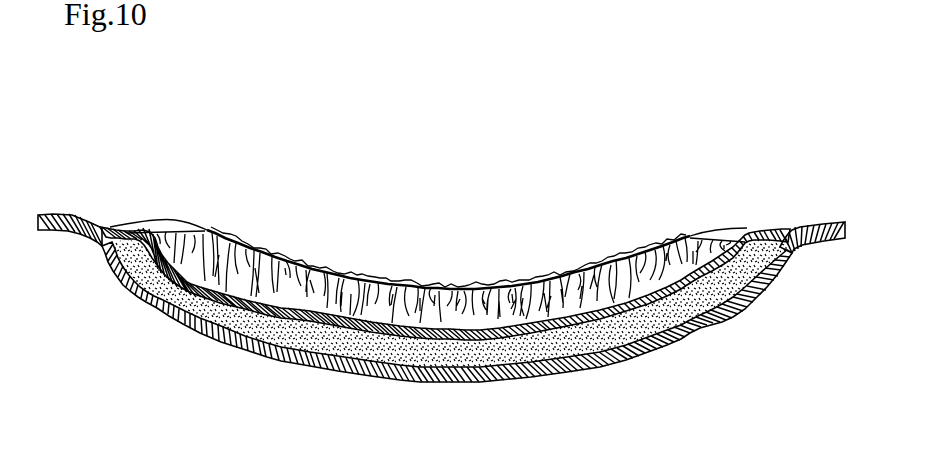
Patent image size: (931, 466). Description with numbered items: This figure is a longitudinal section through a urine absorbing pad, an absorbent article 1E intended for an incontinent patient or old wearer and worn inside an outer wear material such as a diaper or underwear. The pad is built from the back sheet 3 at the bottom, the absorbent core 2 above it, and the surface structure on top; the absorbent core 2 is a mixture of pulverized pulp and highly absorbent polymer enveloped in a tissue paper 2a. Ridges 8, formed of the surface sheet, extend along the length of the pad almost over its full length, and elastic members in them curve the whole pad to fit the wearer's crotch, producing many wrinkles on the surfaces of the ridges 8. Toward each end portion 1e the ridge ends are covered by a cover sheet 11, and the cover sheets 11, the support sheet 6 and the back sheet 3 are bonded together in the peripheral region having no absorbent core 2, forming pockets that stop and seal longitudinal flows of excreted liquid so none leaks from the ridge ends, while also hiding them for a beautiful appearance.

The absorbent article 1E is at (170, 368).
The end portion 1e is at (78, 213).
The cover sheet 11 is at (163, 218).
The support sheet 6 is at (347, 280).
The ridge 8 is at (465, 288).
The tissue paper 2a is at (697, 332).
The absorbent core 2 is at (530, 365).
The back sheet 3 is at (358, 375).